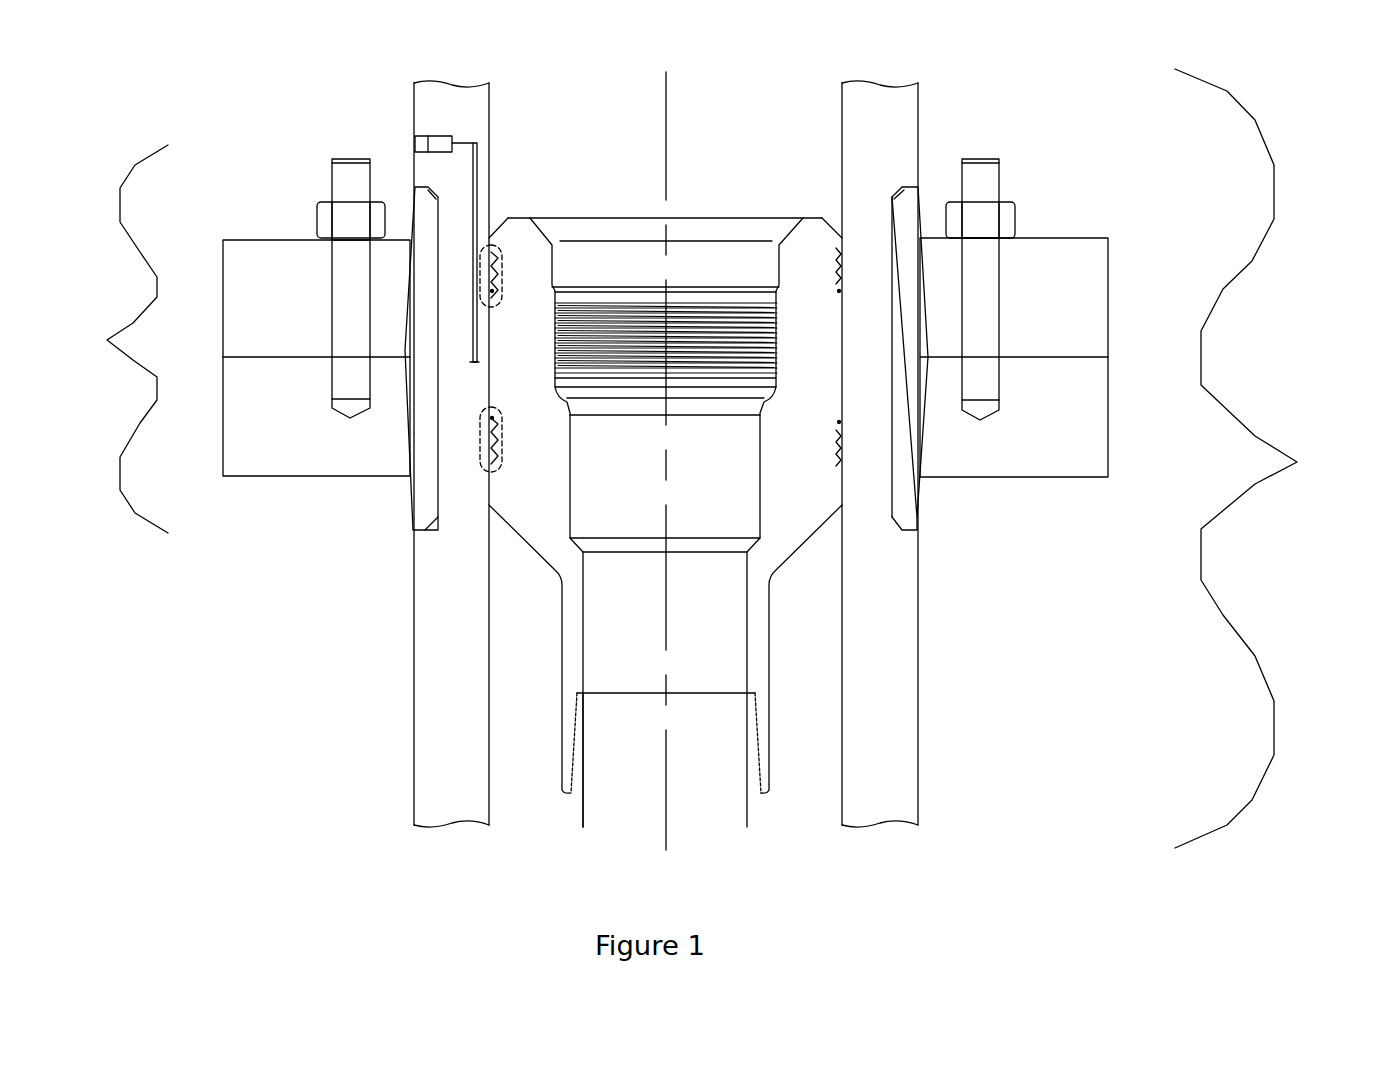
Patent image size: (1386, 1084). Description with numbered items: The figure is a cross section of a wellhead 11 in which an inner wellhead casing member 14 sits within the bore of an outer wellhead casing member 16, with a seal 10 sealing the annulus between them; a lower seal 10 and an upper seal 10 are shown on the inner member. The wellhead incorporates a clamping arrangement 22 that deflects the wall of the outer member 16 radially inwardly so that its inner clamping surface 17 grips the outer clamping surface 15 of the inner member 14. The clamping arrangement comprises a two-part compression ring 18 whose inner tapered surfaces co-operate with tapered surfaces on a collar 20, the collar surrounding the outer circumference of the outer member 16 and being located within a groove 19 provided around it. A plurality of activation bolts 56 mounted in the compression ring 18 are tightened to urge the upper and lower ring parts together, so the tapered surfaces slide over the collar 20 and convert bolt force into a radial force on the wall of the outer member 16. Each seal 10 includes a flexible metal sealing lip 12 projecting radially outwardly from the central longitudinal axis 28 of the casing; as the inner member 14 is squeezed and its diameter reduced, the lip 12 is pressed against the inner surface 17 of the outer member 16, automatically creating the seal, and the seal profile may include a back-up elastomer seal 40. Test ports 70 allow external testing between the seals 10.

The seal 10 is at (480, 253).
The wellhead 11 is at (1297, 462).
The sealing lip 12 is at (485, 450).
The inner wellhead casing member 14 is at (810, 495).
The outer clamping surface 15 is at (848, 378).
The outer wellhead casing member 16 is at (453, 635).
The inner clamping surface 17 is at (832, 259).
The compression ring 18 is at (1080, 265).
The groove 19 is at (925, 187).
The collar 20 is at (907, 511).
The clamping arrangement 22 is at (107, 340).
The central longitudinal axis 28 is at (663, 98).
The back-up elastomer seal 40 is at (848, 423).
The activation bolts 56 is at (350, 298).
The test ports 70 is at (420, 143).